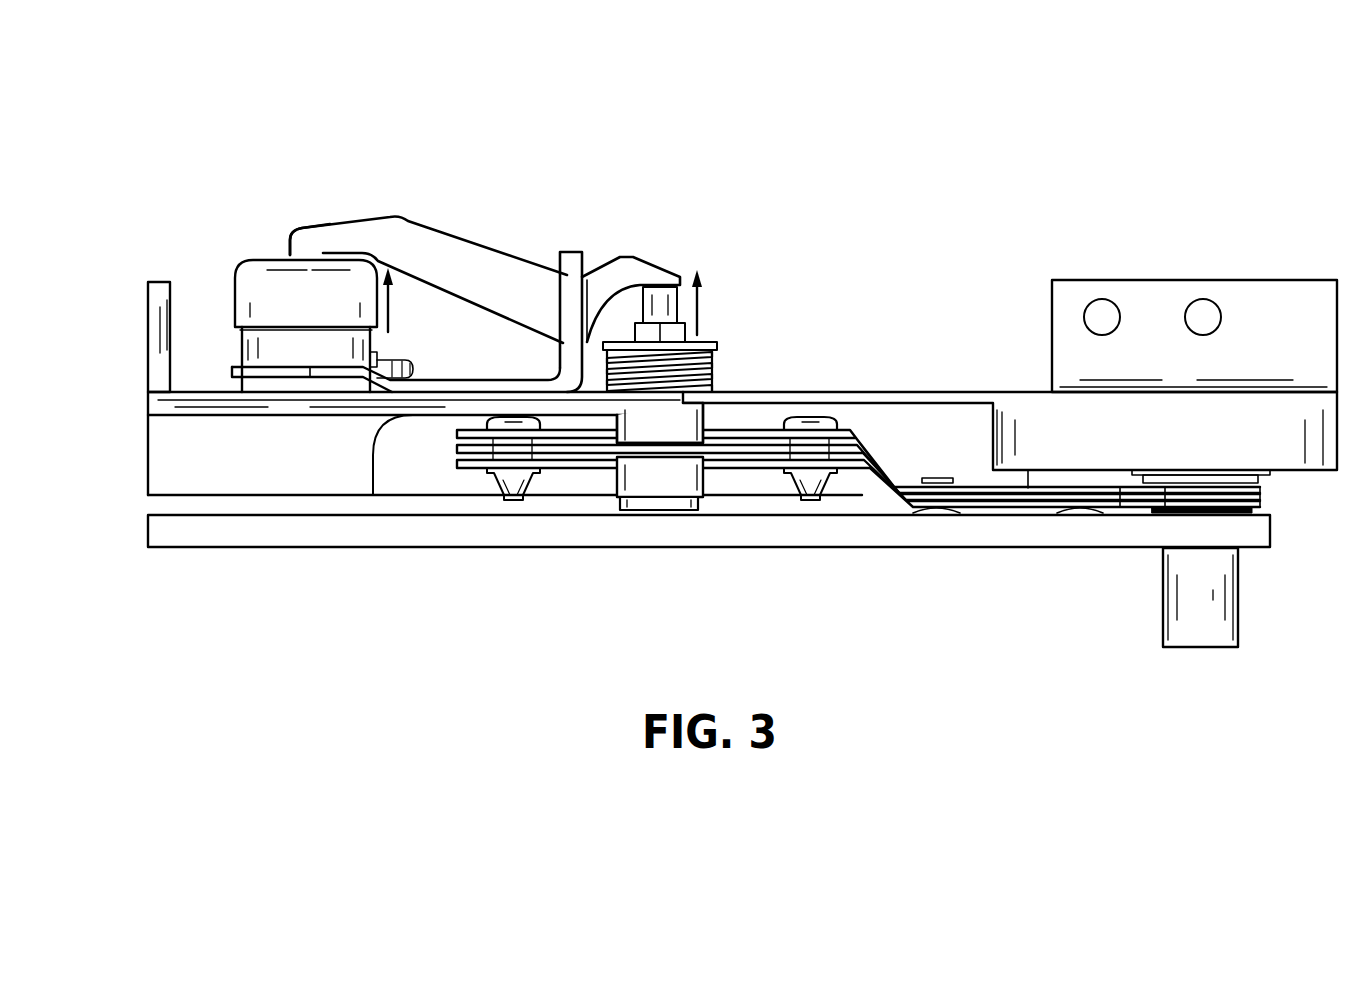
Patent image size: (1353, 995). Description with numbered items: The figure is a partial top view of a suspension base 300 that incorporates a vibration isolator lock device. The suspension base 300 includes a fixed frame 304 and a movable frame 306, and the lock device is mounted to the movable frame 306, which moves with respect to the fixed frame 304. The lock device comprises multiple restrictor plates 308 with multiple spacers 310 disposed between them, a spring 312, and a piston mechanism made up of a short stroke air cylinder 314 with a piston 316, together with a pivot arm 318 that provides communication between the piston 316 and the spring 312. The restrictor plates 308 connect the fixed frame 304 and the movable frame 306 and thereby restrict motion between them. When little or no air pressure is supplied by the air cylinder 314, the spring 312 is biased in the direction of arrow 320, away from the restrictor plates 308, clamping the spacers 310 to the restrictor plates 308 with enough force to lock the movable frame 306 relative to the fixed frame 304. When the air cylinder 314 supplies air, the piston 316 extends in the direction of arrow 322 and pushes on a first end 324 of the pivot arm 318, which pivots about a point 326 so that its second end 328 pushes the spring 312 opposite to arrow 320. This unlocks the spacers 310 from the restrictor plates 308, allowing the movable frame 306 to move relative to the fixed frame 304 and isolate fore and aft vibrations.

The suspension base 300 is at (142, 138).
The fixed frame 304 is at (148, 528).
The movable frame 306 is at (148, 450).
The restrictor plates 308 is at (543, 447).
The spacers 310 is at (630, 484).
The spring 312 is at (713, 362).
The short stroke air cylinder 314 is at (255, 342).
The piston 316 is at (243, 272).
The pivot arm 318 is at (423, 227).
The arrow 320 is at (698, 307).
The arrow 322 is at (390, 307).
The first end 324 is at (323, 238).
The point 326 is at (563, 342).
The second end 328 is at (653, 260).